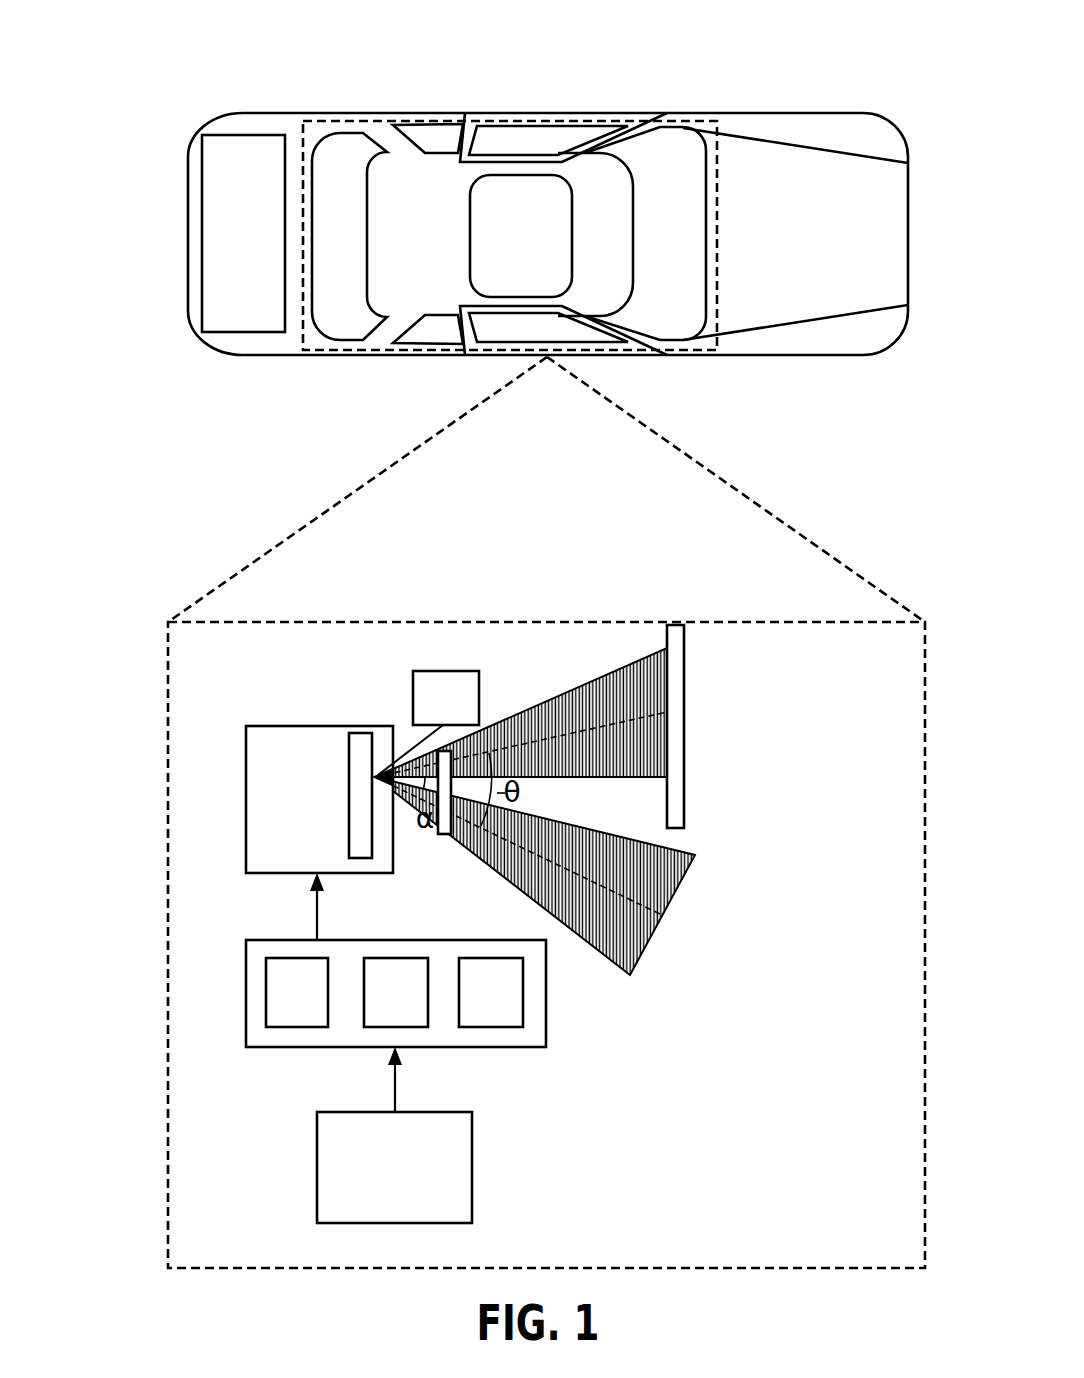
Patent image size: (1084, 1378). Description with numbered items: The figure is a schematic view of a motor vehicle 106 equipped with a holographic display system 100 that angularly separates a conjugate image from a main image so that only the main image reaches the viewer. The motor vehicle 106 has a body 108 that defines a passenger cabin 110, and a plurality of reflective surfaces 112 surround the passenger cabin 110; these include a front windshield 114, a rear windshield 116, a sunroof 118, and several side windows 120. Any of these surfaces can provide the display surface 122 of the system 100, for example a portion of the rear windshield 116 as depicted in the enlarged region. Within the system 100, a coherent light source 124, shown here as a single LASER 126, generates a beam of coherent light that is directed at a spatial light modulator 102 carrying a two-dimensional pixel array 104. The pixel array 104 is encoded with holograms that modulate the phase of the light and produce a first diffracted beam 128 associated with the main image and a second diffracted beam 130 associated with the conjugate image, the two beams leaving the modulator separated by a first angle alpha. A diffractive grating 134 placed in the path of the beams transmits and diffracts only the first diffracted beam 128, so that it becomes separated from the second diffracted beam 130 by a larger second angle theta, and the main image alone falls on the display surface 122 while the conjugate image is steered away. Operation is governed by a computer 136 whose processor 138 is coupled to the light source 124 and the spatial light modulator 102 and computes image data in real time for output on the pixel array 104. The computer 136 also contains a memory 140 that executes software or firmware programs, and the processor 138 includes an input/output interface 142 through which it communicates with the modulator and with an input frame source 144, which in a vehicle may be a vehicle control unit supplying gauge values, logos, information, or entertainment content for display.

The holographic display system 100 is at (143, 599).
The spatial light modulator 102 is at (245, 757).
The two-dimensional pixel array 104 is at (347, 758).
The motor vehicle 106 is at (184, 124).
The body 108 is at (187, 222).
The passenger cabin 110 is at (717, 293).
The reflective surfaces 112 is at (476, 205).
The front windshield 114 is at (707, 218).
The rear windshield 116 is at (312, 308).
The sunroof 118 is at (573, 208).
The side windows 120 is at (513, 137).
The display surface 122 is at (662, 696).
The coherent light source 124 is at (420, 650).
The LASER 126 is at (445, 671).
The first diffracted beam 128 is at (558, 698).
The second diffracted beam 130 is at (527, 876).
The diffractive grating 134 is at (410, 743).
The computer 136 is at (369, 985).
The processor 138 is at (683, 830).
The memory 140 is at (396, 992).
The input/output interface 142 is at (447, 836).
The input frame source 144 is at (317, 1157).